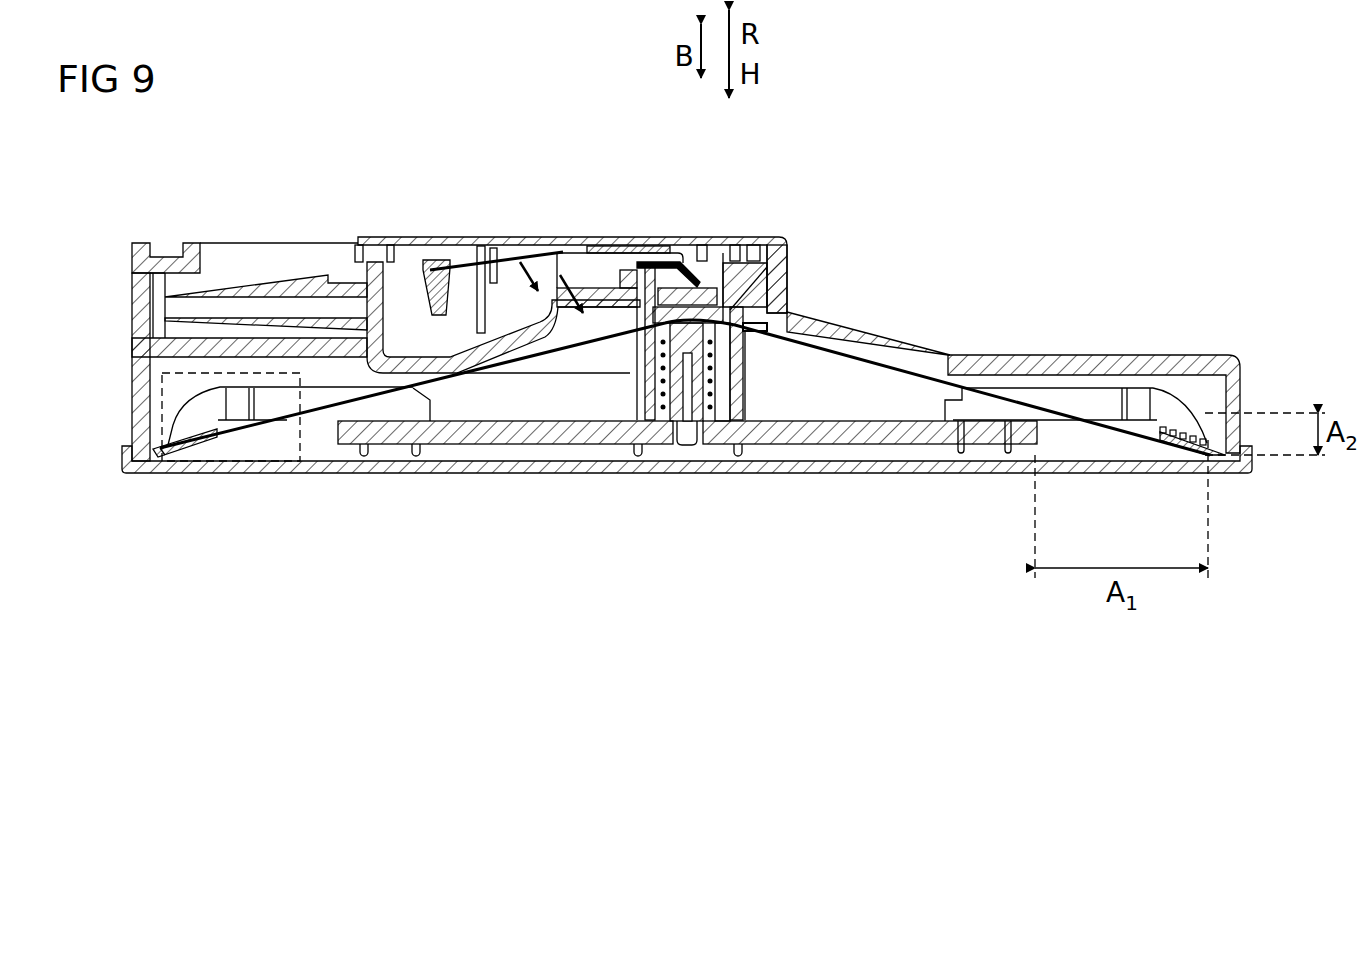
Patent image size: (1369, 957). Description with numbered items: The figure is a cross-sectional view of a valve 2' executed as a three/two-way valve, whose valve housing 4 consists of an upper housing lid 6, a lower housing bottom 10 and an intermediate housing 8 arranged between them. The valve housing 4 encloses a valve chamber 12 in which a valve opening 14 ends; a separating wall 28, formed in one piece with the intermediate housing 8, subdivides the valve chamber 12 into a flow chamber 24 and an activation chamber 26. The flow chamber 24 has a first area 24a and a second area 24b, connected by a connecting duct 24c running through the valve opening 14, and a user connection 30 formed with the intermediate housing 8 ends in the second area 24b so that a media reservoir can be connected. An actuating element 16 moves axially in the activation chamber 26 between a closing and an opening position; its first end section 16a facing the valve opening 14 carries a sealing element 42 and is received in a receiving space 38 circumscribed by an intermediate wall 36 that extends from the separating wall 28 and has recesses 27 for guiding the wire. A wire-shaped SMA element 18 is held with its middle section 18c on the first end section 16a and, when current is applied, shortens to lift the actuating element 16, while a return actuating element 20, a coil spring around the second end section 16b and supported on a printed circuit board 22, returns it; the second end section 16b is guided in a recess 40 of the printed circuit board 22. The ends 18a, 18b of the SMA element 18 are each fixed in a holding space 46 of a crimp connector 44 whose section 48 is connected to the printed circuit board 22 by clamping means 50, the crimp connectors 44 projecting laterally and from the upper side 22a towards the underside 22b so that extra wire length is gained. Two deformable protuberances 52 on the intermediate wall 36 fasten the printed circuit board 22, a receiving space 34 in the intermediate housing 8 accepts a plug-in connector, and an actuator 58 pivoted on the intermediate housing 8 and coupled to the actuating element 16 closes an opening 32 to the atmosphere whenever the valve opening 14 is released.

The valve 2' is at (880, 139).
The valve housing 4 is at (858, 322).
The housing lid 6 is at (680, 283).
The intermediate housing 8 is at (1008, 358).
The housing bottom 10 is at (893, 473).
The valve chamber 12 is at (573, 268).
The valve opening 14 is at (676, 288).
The actuating element 16 is at (722, 330).
The first end section 16a is at (640, 262).
The second end section 16b is at (716, 425).
The SMA element 18 is at (452, 383).
The end of SMA element 18a is at (182, 452).
The end of SMA element 18b is at (1188, 472).
The middle section 18c is at (625, 388).
The return actuating element 20 is at (682, 446).
The printed circuit board 22 is at (455, 446).
The upper side 22a is at (488, 408).
The underside 22b is at (374, 456).
The flow chamber 24 is at (403, 310).
The first area 24a is at (753, 262).
The second area 24b is at (512, 288).
The connecting duct 24c is at (708, 258).
The activation chamber 26 is at (546, 400).
The recesses 27 is at (738, 402).
The separating wall 28 is at (488, 325).
The user connection 30 is at (263, 308).
The opening 32 is at (440, 236).
The receiving space 34 is at (162, 393).
The intermediate wall 36 is at (740, 322).
The receiving space 38 is at (770, 268).
The recess 40 is at (689, 430).
The sealing element 42 is at (740, 275).
The crimp connector 44 is at (276, 410).
The holding space 46 is at (185, 432).
The section 48 is at (413, 456).
The clamping means 50 is at (962, 455).
The deformable protuberances 52 is at (638, 456).
The actuator 58 is at (560, 256).